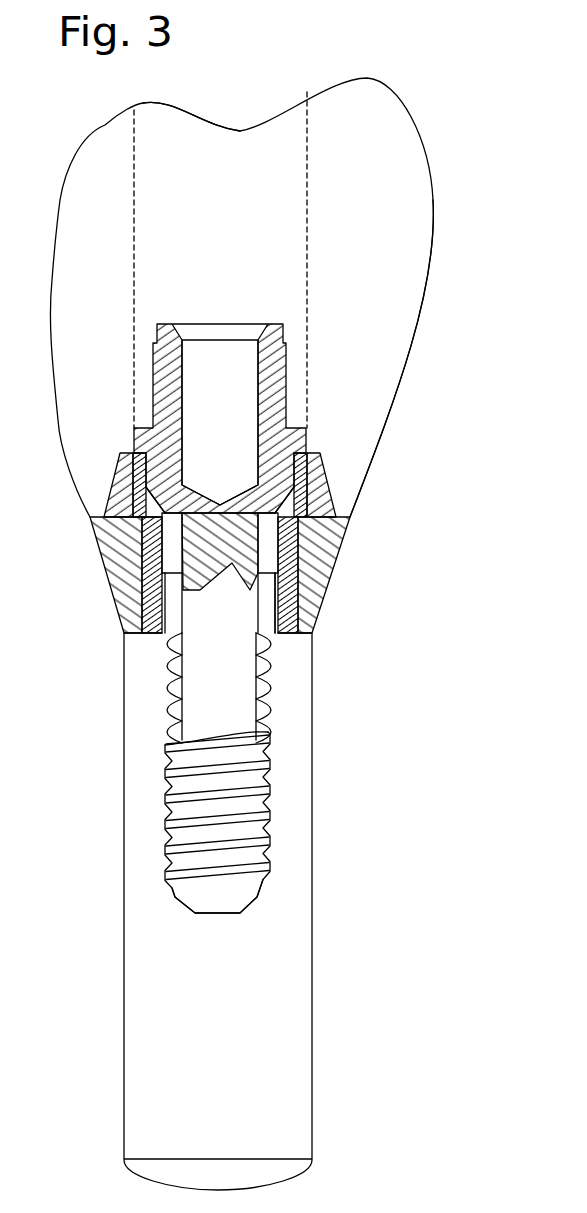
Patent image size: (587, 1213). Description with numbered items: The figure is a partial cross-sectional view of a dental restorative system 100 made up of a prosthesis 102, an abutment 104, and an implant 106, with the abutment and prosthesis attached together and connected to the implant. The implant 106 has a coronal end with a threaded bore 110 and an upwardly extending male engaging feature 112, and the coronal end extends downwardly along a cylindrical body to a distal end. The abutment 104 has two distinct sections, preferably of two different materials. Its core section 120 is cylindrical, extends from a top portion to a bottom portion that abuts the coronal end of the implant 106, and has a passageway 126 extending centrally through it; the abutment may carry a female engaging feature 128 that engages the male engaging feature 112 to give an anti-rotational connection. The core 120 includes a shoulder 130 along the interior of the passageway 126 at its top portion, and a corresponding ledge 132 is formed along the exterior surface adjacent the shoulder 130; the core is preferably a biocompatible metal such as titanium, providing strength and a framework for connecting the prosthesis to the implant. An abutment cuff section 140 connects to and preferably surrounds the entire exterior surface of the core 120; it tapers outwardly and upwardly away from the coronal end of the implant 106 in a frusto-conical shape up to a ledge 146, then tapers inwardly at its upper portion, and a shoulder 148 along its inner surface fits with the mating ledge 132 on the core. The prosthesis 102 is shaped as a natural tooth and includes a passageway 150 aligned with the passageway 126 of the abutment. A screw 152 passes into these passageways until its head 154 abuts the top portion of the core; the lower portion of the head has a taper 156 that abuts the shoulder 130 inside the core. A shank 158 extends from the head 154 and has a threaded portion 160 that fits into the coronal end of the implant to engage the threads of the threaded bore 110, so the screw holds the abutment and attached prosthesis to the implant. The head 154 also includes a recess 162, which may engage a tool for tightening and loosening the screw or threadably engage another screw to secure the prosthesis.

The dental restorative system 100 is at (352, 65).
The prosthesis 102 is at (404, 374).
The abutment 104 is at (355, 536).
The implant 106 is at (320, 851).
The threaded bore 110 is at (163, 672).
The male engaging feature 112 is at (311, 610).
The core section 120 is at (143, 585).
The passageway 126 is at (265, 537).
The female engaging feature 128 is at (273, 587).
The shoulder 130 is at (150, 508).
The ledge 132 is at (138, 526).
The abutment cuff section 140 is at (355, 549).
The ledge 146 is at (92, 512).
The shoulder 148 is at (302, 516).
The passageway 150 is at (220, 143).
The screw 152 is at (161, 804).
The head 154 is at (290, 372).
The taper 156 is at (173, 500).
The shank 158 is at (208, 687).
The threaded portion 160 is at (263, 862).
The recess 162 is at (200, 352).